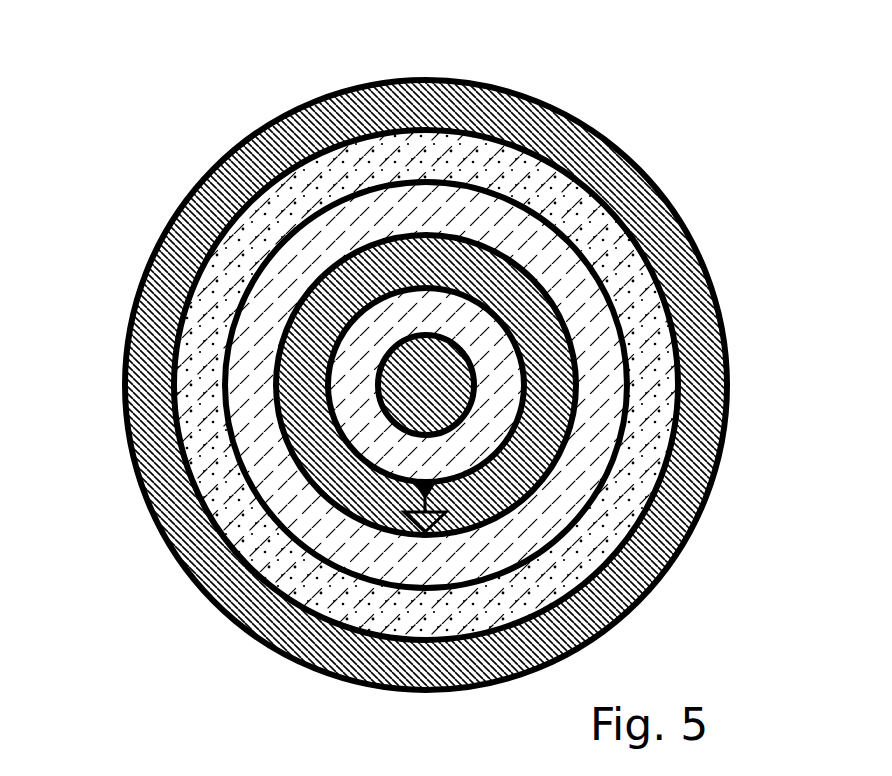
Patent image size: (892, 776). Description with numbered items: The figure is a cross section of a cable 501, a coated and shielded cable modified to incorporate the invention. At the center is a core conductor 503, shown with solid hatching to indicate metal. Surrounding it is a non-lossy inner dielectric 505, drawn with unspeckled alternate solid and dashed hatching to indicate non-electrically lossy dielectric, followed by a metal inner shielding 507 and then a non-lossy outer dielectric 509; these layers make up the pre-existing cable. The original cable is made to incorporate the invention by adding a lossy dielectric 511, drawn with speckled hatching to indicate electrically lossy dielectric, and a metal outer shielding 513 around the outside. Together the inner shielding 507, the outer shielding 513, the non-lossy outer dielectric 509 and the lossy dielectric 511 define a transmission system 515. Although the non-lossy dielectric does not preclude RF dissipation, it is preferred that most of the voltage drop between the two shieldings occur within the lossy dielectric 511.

The cable 501 is at (162, 97).
The core conductor 503 is at (448, 401).
The non-lossy inner dielectric 505 is at (449, 323).
The inner shielding 507 is at (453, 275).
The non-lossy outer dielectric 509 is at (450, 221).
The lossy dielectric 511 is at (453, 168).
The outer shielding 513 is at (444, 115).
The transmission system 515 is at (537, 277).